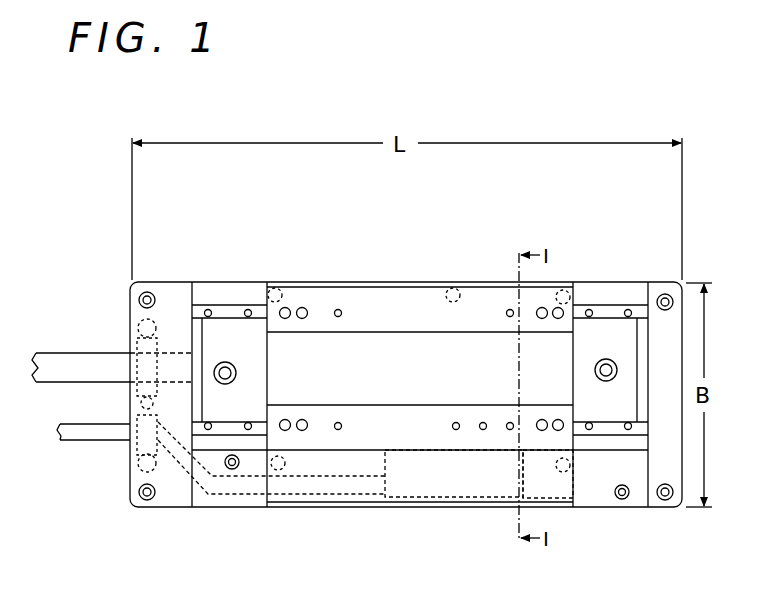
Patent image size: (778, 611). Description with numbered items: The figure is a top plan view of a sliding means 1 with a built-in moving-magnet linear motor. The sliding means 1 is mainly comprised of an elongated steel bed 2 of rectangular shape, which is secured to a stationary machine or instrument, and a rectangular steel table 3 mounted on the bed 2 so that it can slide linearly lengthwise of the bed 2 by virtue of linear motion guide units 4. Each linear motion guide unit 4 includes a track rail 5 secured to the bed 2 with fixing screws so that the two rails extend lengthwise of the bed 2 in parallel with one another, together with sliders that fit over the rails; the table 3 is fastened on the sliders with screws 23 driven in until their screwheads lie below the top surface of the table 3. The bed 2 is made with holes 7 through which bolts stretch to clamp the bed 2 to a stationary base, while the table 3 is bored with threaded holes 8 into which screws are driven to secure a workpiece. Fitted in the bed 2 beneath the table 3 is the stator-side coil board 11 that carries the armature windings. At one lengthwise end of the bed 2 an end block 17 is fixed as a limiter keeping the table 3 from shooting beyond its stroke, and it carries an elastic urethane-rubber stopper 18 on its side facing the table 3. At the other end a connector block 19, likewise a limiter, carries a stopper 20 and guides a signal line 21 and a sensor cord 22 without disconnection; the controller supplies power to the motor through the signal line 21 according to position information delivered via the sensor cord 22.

The sliding means 1 is at (474, 250).
The bed 2 is at (622, 282).
The table 3 is at (393, 290).
The linear motion guide unit 4 is at (222, 302).
The track rail 5 is at (641, 305).
The hole 7 is at (275, 290).
The threaded hole 8 is at (338, 309).
The coil board 11 is at (580, 412).
The end block 17 is at (663, 340).
The stopper 18 is at (643, 398).
The connector block 19 is at (166, 298).
The stopper 20 is at (198, 402).
The signal line 21 is at (73, 368).
The sensor cord 22 is at (91, 432).
The screw 23 is at (299, 308).